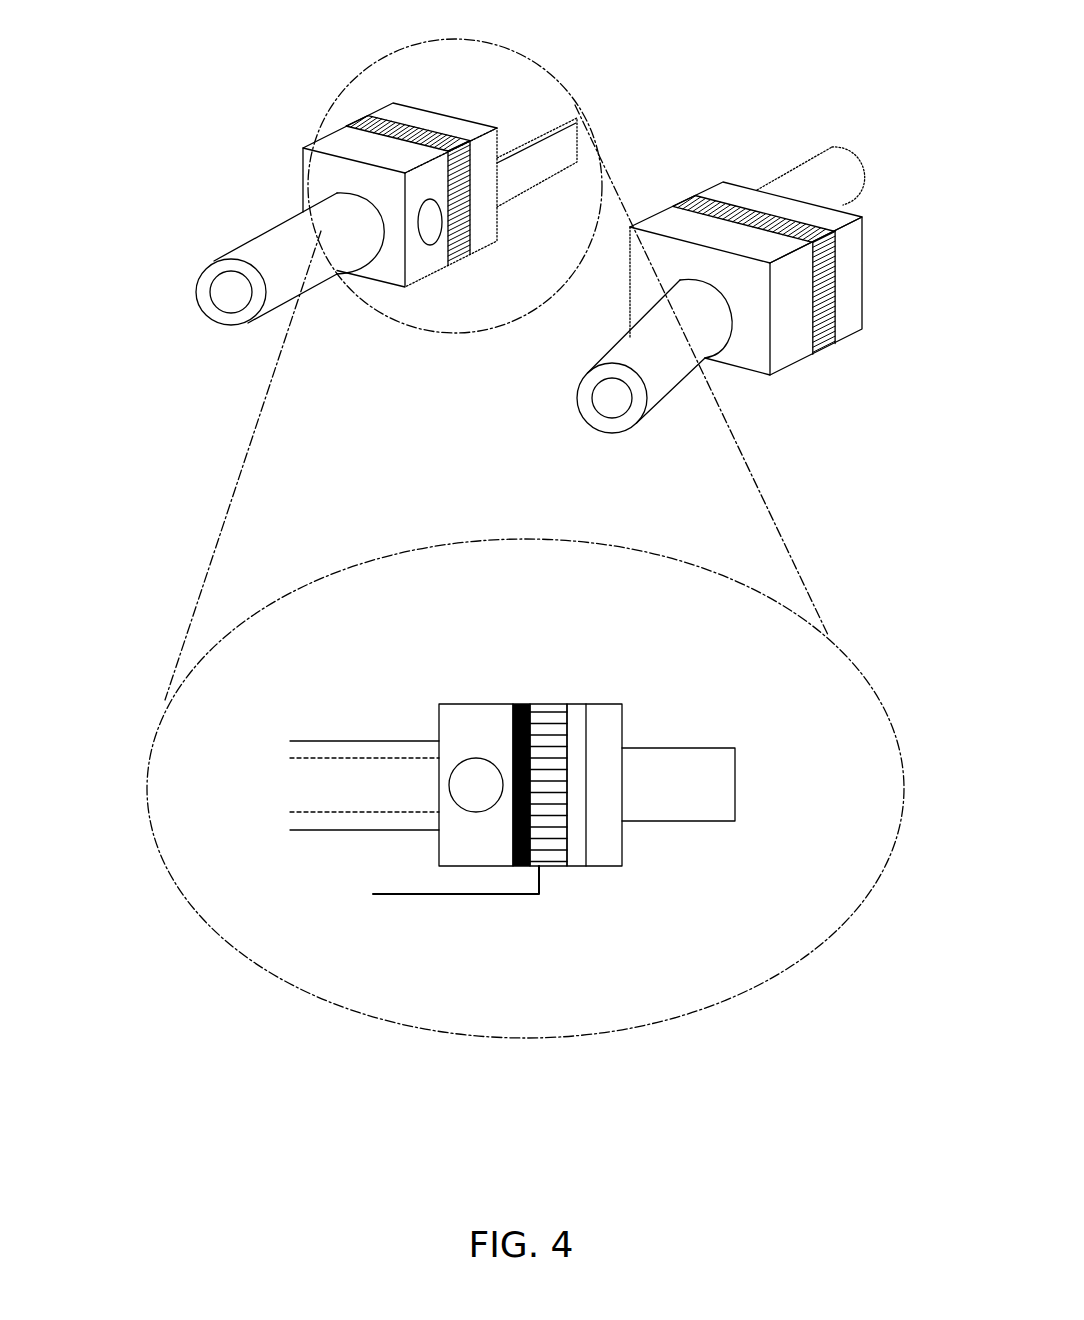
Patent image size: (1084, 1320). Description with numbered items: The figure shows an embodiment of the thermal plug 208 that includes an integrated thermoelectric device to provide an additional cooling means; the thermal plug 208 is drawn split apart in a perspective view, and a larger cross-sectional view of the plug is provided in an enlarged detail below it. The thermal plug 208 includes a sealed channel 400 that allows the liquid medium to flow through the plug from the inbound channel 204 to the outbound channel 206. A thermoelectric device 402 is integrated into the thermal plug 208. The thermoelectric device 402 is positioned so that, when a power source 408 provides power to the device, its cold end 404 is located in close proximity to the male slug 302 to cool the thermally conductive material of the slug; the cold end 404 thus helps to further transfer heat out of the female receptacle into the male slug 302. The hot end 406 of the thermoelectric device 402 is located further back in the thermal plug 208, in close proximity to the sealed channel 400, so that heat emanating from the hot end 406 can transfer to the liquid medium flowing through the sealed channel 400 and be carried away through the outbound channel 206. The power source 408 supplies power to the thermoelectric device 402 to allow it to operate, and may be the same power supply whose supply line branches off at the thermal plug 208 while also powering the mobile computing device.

The inbound channel 204 is at (265, 233).
The outbound channel 206 is at (600, 428).
The thermal plug 208 is at (380, 110).
The male slug 302 is at (820, 925).
The sealed channel 400 is at (464, 757).
The thermoelectric device 402 is at (558, 866).
The cold end 404 is at (577, 703).
The hot end 406 is at (522, 703).
The power source 408 is at (313, 929).